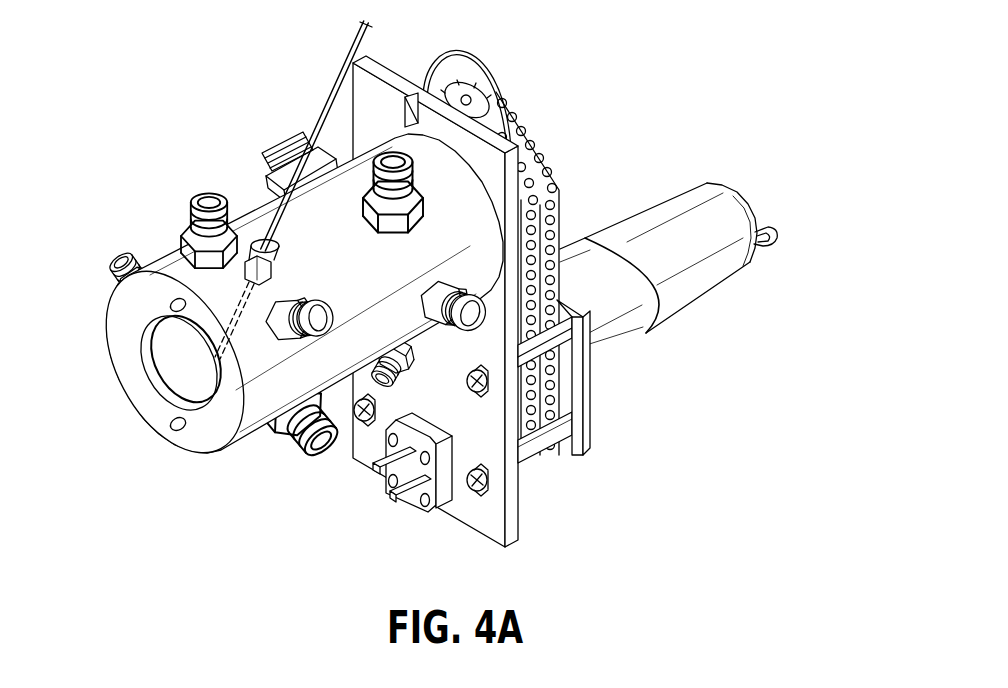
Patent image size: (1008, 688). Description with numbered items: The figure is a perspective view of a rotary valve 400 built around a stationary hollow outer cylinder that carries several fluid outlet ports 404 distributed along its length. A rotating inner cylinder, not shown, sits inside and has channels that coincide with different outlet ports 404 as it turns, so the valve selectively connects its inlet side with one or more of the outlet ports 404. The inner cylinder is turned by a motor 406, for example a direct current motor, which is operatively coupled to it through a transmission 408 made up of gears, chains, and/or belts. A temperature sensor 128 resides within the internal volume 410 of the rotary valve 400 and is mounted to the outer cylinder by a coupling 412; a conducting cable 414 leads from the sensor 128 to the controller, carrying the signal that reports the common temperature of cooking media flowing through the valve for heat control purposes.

The rotary valve 400 is at (684, 44).
The fluid outlet ports 404 is at (276, 267).
The motor 406 is at (643, 226).
The transmission 408 is at (528, 142).
The internal volume 410 is at (173, 383).
The coupling 412 is at (282, 245).
The conducting cable 414 is at (350, 51).
The temperature sensor 128 is at (217, 345).